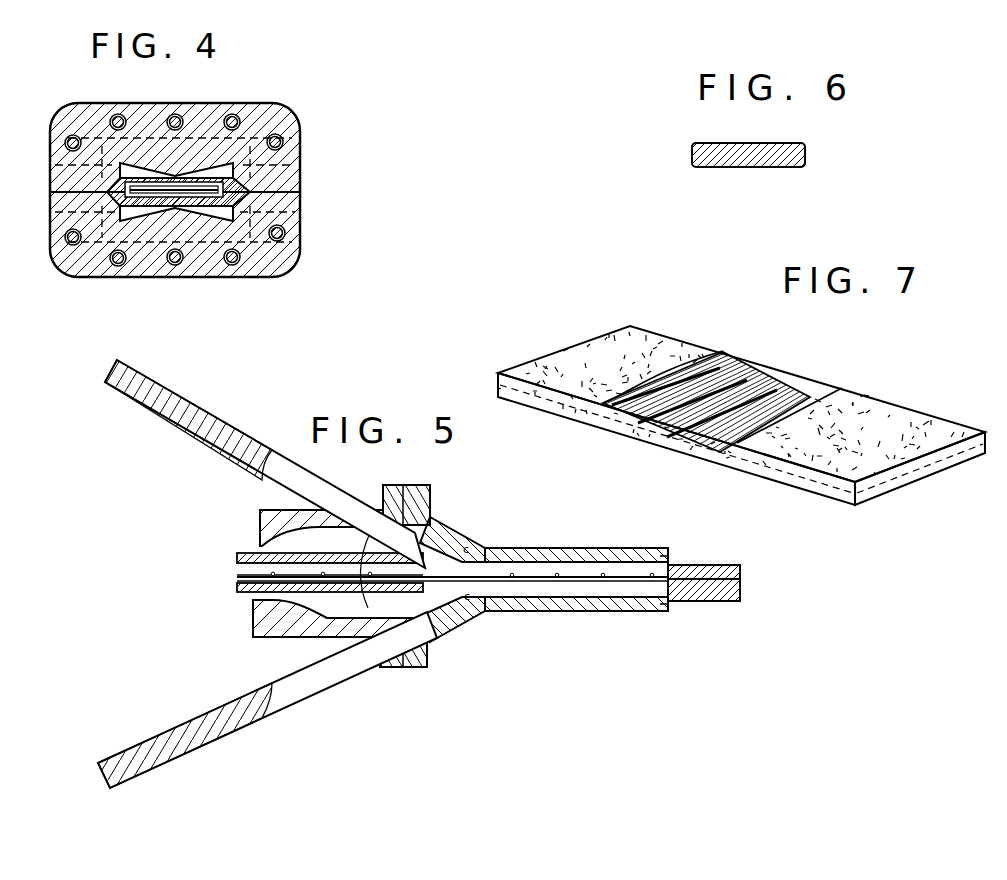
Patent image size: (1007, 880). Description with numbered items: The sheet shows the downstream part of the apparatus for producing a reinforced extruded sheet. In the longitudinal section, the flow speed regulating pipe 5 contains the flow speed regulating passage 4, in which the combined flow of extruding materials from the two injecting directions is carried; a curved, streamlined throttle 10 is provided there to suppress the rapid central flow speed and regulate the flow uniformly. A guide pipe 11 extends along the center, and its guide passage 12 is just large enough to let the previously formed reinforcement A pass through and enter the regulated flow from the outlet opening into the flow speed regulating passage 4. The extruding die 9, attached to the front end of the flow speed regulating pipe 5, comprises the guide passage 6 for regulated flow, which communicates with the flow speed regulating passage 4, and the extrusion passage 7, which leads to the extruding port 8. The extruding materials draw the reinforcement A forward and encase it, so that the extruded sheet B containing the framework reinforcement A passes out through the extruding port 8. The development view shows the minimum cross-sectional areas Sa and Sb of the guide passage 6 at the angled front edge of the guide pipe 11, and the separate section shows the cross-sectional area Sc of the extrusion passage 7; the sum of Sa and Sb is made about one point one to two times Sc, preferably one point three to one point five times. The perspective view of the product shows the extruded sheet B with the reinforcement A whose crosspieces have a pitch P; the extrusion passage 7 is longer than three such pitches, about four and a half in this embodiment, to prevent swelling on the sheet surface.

In FIG. 5, the flow speed regulating passage 4 is at (330, 534).
In FIG. 4, the flow speed regulating pipe 5 is at (180, 171).
In FIG. 5, the flow speed regulating pipe 5 is at (299, 558).
In FIG. 5, the guide passage for regulated flow 6 is at (452, 574).
In FIG. 5, the extrusion passage 7 is at (576, 631).
In FIG. 5, the extruding port 8 is at (651, 607).
In FIG. 5, the extruding die 9 is at (576, 523).
In FIG. 4, the throttle 10 is at (176, 191).
In FIG. 5, the throttle 10 is at (292, 573).
In FIG. 4, the guide pipe 11 is at (209, 239).
In FIG. 5, the guide pipe 11 is at (293, 568).
In FIG. 5, the guide passage 12 is at (407, 558).
In FIG. 4, the reinforcement A is at (174, 247).
In FIG. 5, the reinforcement A is at (453, 542).
In FIG. 7, the reinforcement A is at (706, 394).
In FIG. 5, the extruded sheet B is at (704, 558).
In FIG. 7, the extruded sheet B is at (741, 415).
In FIG. 5, the crosspiece pitch P is at (604, 578).
In FIG. 5, the minimum cross-sectional area of guide passage (upper) Sa is at (265, 464).
In FIG. 5, the minimum cross-sectional area of guide passage (lower) Sb is at (267, 700).
In FIG. 6, the cross-sectional area of extrusion passage Sc is at (777, 146).